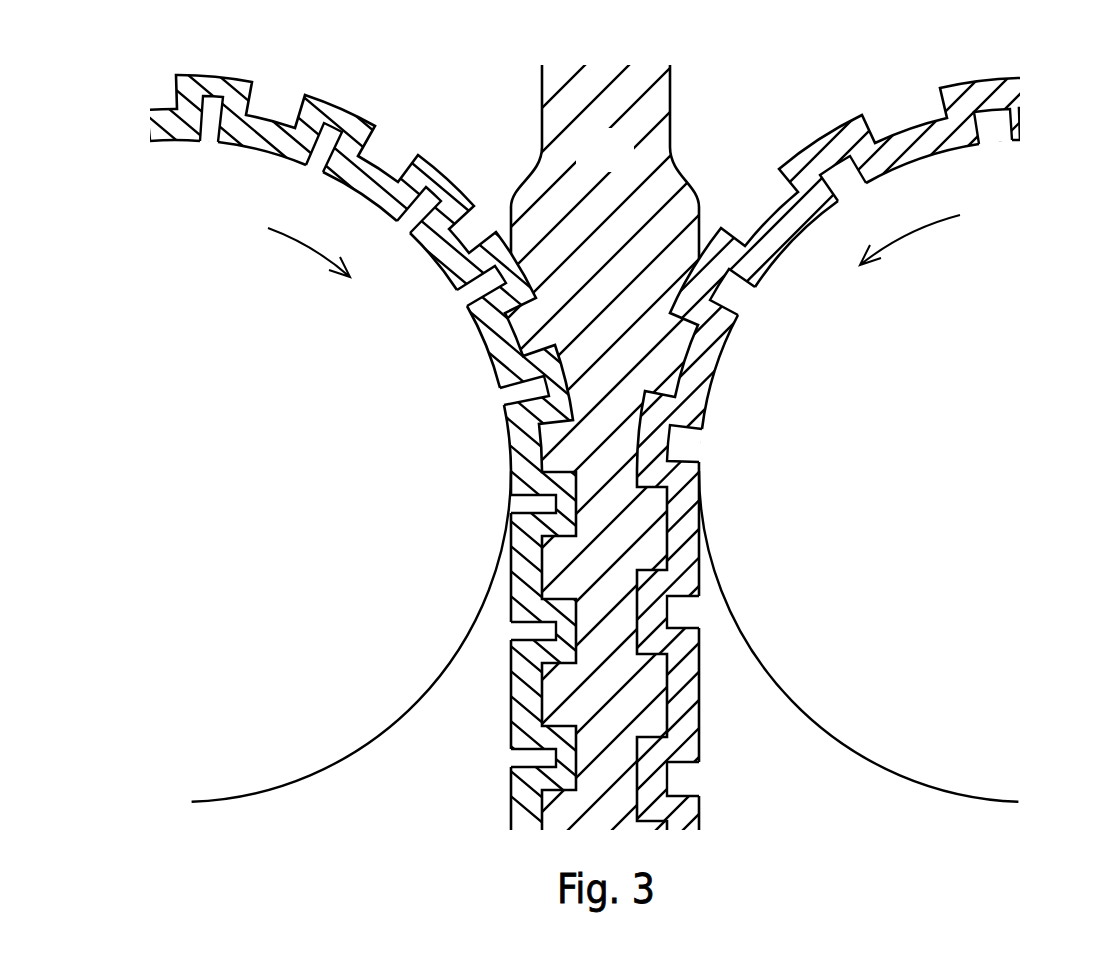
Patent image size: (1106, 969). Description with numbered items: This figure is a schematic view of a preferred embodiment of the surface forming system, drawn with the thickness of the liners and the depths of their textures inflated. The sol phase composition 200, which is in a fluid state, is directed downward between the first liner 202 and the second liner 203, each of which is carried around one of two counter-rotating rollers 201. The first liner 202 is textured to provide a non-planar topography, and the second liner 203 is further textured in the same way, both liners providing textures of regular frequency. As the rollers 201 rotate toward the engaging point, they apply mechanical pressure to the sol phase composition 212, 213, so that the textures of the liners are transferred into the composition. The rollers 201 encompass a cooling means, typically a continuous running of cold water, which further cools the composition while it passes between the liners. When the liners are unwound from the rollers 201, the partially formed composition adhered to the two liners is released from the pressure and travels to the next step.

The sol phase composition 200 is at (583, 165).
The rollers 201 is at (268, 534).
The first liner 202 is at (350, 435).
The second liner 203 is at (553, 434).
The mechanical pressure applied to the sol phase composition 212 is at (545, 369).
The mechanical pressure applied to the sol phase composition 213 is at (657, 407).